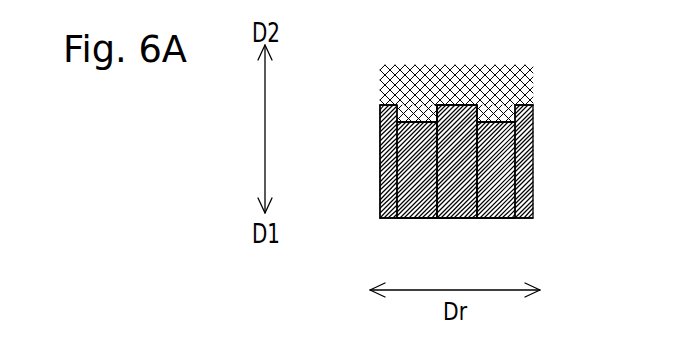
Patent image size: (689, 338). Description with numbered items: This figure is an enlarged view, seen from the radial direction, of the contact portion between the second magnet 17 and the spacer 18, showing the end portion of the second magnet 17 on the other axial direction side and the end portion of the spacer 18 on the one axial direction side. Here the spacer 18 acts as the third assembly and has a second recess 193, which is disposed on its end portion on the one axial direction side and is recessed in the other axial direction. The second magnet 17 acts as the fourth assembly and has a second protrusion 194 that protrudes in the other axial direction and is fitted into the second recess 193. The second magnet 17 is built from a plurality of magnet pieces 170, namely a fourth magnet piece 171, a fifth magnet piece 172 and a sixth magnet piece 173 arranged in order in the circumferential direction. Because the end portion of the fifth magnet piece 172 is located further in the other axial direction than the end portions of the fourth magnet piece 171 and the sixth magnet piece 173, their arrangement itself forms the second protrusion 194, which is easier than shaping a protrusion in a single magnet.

The second magnet 17 is at (380, 187).
The spacer 18 is at (467, 70).
The magnet pieces 170 is at (368, 248).
The fourth magnet piece 171 is at (417, 218).
The fifth magnet piece 172 is at (453, 218).
The sixth magnet piece 173 is at (497, 218).
The second recess 193 is at (448, 103).
The second protrusion 194 is at (380, 146).